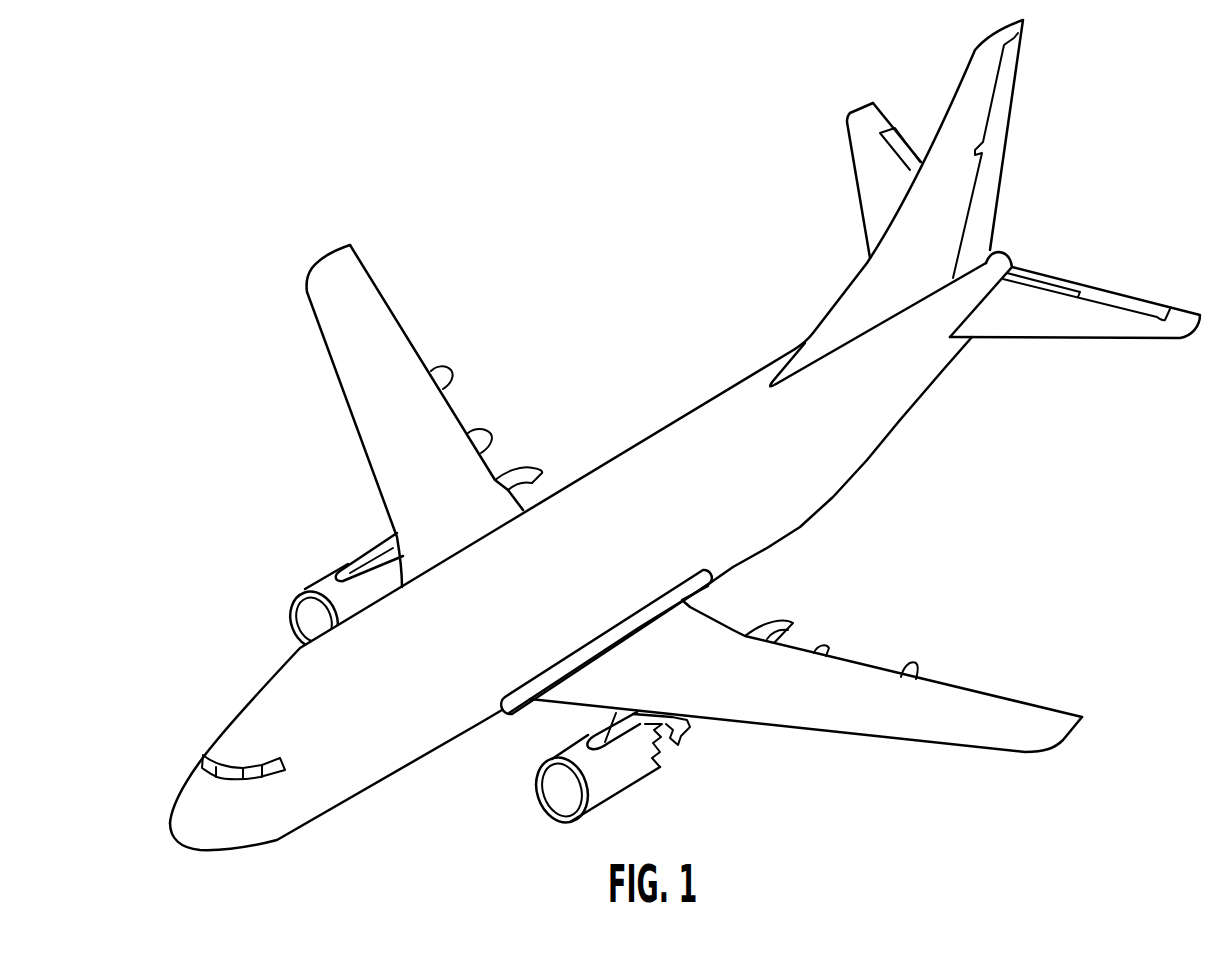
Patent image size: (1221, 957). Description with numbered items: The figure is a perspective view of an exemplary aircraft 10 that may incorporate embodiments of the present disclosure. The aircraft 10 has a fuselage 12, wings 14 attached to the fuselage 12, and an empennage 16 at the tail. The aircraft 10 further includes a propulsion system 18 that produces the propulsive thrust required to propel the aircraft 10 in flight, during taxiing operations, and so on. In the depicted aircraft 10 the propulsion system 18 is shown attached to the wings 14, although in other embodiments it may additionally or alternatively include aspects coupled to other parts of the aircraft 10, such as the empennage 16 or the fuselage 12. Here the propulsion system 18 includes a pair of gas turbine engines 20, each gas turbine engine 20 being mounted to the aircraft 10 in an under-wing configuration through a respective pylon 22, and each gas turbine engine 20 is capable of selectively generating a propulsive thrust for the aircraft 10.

The aircraft 10 is at (586, 240).
The fuselage 12 is at (758, 530).
The wings 14 is at (365, 298).
The empennage 16 is at (1054, 168).
The propulsion system 18 is at (303, 522).
The gas turbine engine 20 is at (333, 590).
The pylon 22 is at (377, 551).